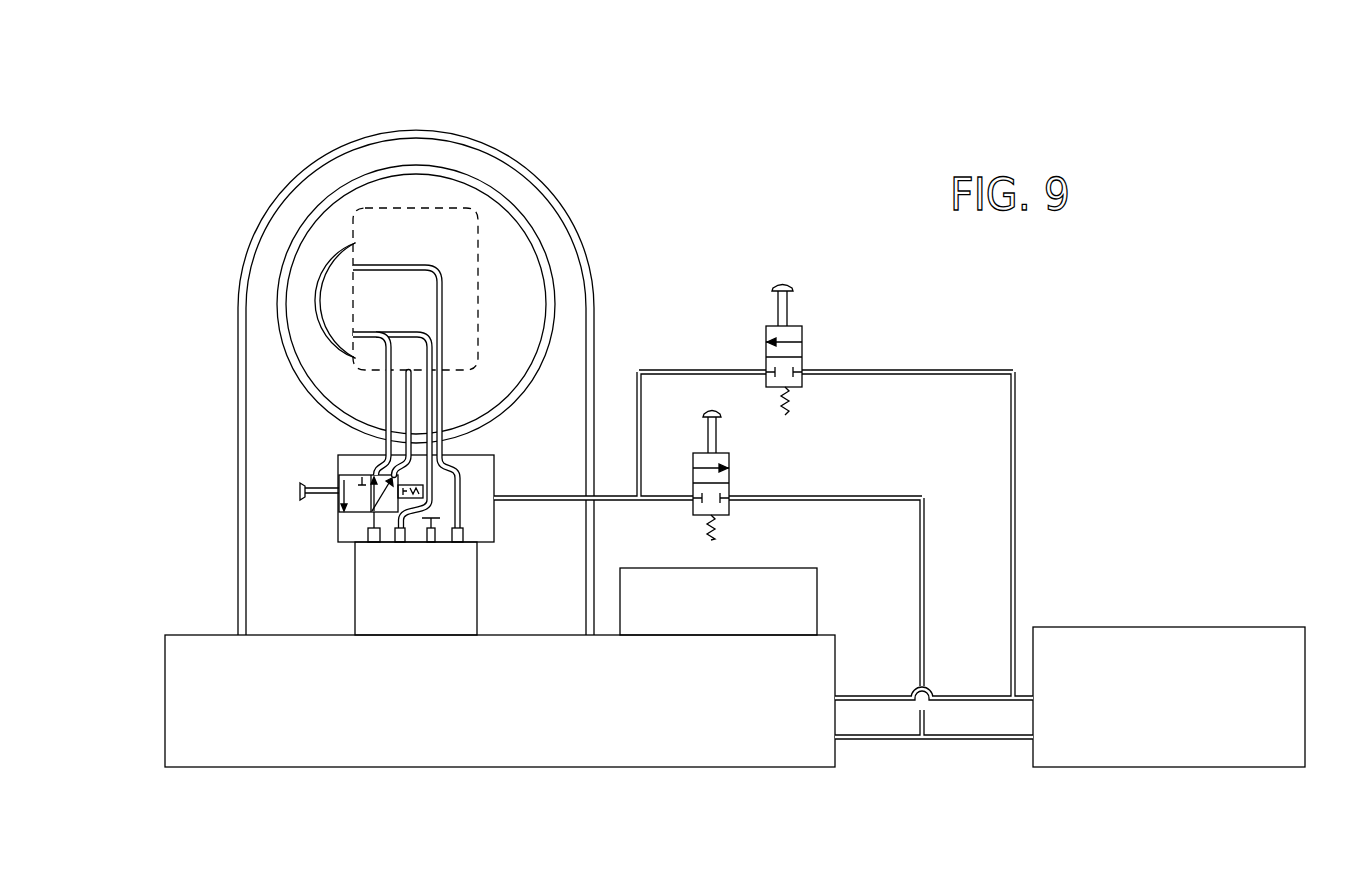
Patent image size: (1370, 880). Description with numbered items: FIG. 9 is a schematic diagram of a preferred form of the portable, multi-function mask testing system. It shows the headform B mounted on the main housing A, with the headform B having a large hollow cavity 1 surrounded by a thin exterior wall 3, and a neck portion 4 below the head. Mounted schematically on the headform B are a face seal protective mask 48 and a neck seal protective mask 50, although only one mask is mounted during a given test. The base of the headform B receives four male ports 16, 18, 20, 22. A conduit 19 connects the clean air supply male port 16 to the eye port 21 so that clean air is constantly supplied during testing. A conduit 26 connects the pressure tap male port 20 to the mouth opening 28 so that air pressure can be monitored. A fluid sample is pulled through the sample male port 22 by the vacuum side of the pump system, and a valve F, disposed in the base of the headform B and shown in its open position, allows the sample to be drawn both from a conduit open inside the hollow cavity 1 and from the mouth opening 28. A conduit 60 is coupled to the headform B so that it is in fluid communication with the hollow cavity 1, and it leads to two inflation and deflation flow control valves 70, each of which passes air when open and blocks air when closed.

The hollow cavity 1 is at (480, 253).
The exterior wall 3 is at (480, 325).
The neck portion 4 is at (346, 312).
The clean air supply male port 16 is at (460, 546).
The male port 18 is at (434, 546).
The conduit 19 is at (458, 487).
The pressure tap male port 20 is at (400, 545).
The eye port 21 is at (355, 268).
The sample male port 22 is at (376, 546).
The conduit 26 is at (437, 473).
The mouth opening 28 is at (497, 150).
The face seal protective mask 48 is at (316, 292).
The neck seal protective mask 50 is at (373, 172).
The conduit 60 is at (530, 500).
The flow control valve 70 is at (766, 336).
The main housing A is at (705, 758).
The headform B is at (1172, 758).
The valve F is at (305, 490).